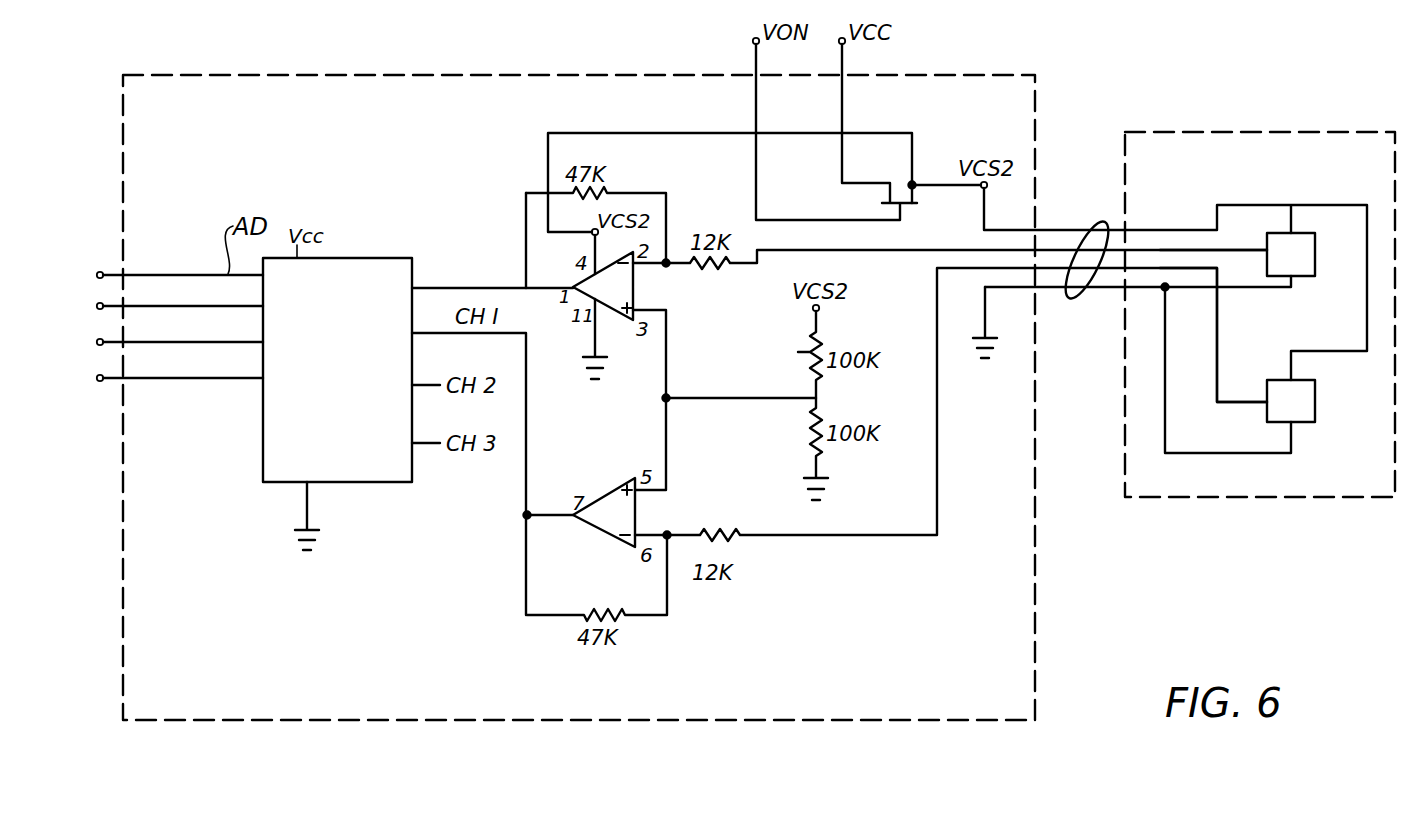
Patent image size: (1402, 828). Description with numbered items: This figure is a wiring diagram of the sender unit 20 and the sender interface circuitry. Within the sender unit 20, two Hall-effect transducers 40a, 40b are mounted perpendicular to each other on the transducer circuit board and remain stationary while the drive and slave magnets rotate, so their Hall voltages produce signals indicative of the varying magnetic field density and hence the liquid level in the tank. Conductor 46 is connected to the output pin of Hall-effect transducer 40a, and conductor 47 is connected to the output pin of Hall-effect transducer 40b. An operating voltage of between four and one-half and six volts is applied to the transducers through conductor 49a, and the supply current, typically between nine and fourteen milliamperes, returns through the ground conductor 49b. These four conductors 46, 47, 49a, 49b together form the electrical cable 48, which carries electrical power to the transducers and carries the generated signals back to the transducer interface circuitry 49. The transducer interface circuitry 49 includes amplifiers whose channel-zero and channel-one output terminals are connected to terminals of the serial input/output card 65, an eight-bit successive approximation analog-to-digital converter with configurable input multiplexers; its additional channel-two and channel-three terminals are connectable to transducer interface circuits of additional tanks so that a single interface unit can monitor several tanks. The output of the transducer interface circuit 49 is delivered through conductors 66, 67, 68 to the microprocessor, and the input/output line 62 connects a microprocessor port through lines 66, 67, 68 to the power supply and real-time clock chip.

The sender unit 20 is at (1276, 132).
The conductor 46 is at (1245, 250).
The conductor 47 is at (1229, 400).
The electrical cable 48 is at (1073, 298).
The transducer interface circuitry 49 is at (1009, 76).
The conductor 49a is at (1180, 231).
The ground conductor 49b is at (1160, 292).
The Hall-effect transducer 40a is at (1300, 278).
The Hall-effect transducer 40b is at (1316, 404).
The input/output line 62 is at (424, 288).
The input/output card 65 is at (256, 463).
The conductor 66 is at (158, 306).
The conductor 67 is at (214, 344).
The conductor 68 is at (227, 380).